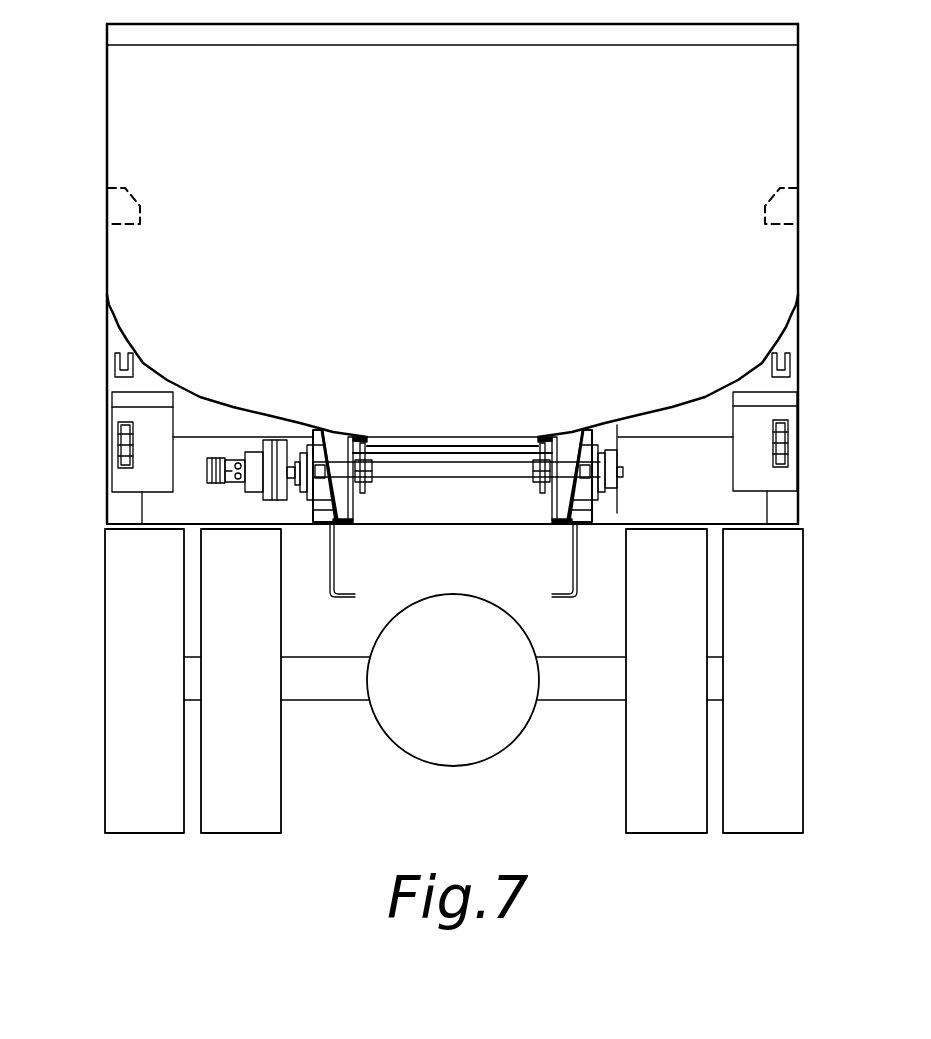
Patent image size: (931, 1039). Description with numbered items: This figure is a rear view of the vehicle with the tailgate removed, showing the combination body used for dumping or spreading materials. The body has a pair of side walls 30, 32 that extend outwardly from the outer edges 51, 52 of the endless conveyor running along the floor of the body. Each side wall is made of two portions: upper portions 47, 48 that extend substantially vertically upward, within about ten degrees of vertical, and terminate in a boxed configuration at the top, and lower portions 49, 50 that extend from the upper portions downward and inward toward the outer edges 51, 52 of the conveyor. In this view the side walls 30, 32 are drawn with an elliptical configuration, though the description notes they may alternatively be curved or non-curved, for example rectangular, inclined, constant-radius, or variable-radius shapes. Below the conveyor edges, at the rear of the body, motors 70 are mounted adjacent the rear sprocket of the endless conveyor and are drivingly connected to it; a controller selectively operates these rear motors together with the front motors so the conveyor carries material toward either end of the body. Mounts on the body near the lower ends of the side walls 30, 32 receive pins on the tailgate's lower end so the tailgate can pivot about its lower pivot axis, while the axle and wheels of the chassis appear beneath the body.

The side wall 30 is at (109, 134).
The side wall 32 is at (797, 134).
The upper portion 47 is at (108, 262).
The upper portion 48 is at (798, 262).
The lower portion 49 is at (233, 402).
The lower portion 50 is at (663, 405).
The outer edge 51 is at (367, 437).
The outer edge 52 is at (534, 437).
The motor 70 is at (243, 485).